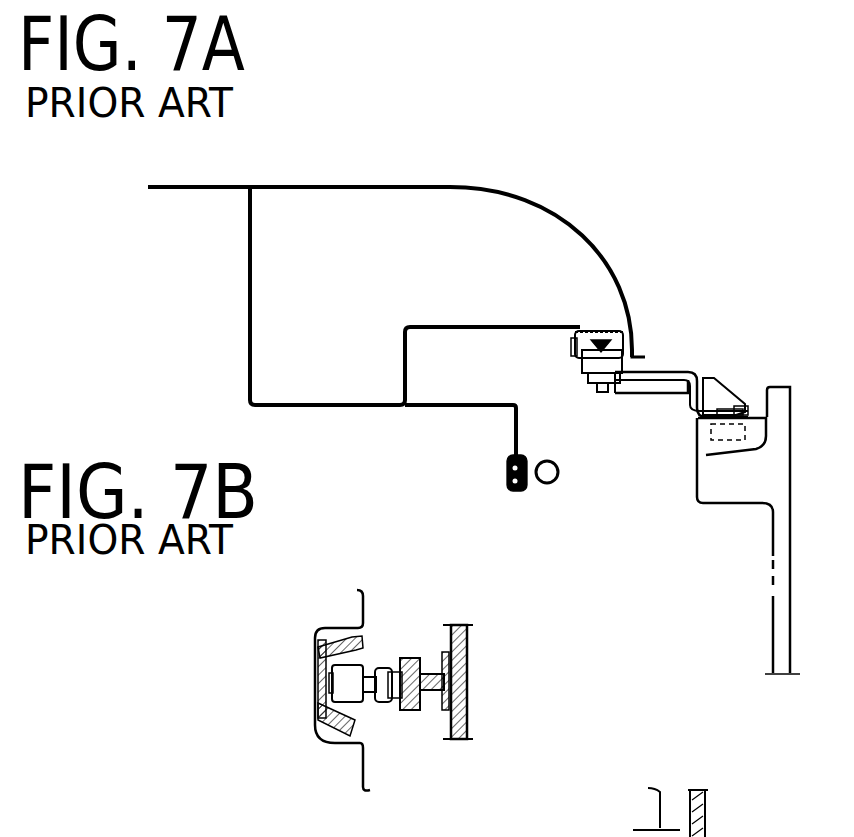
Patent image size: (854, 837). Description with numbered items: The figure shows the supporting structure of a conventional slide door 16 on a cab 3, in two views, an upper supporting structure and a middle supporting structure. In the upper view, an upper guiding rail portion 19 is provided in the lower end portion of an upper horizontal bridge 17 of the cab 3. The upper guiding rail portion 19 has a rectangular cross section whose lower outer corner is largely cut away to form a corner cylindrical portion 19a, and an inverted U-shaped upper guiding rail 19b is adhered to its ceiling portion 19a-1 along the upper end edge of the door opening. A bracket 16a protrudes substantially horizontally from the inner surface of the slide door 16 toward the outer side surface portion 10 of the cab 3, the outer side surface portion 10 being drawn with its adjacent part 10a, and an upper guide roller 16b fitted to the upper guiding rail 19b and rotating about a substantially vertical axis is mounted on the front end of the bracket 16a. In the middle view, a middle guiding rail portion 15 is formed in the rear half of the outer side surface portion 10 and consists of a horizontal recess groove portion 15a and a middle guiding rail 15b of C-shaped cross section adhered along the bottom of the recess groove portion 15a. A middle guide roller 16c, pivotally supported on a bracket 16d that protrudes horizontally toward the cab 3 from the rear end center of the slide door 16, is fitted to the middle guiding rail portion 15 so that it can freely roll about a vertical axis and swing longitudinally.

In FIG. 7A, the cab 3 is at (561, 166).
In FIG. 7A, the upper horizontal bridge 17 is at (593, 243).
In FIG. 7A, the outer side surface portion 10 is at (649, 320).
In FIG. 7B, the outer side surface portion 10 is at (357, 604).
In FIG. 7A, the outer side surface portion flange 10a is at (633, 358).
In FIG. 7A, the bracket 16a is at (700, 375).
In FIG. 7A, the upper guide roller 16b is at (583, 328).
In FIG. 7B, the middle guide roller 16c is at (316, 702).
In FIG. 7B, the bracket 16d is at (425, 655).
In FIG. 7A, the slide door 16 is at (772, 600).
In FIG. 7B, the slide door 16 is at (468, 701).
In FIG. 7A, the upper guiding rail portion 19 is at (592, 470).
In FIG. 7A, the corner cylindrical portion 19a is at (464, 418).
In FIG. 7A, the ceiling portion 19a-1 is at (477, 327).
In FIG. 7A, the upper guiding rail 19b is at (577, 345).
In FIG. 7B, the middle guiding rail portion 15 is at (264, 710).
In FIG. 7B, the recess groove portion 15a is at (318, 632).
In FIG. 7B, the middle guiding rail 15b is at (317, 727).